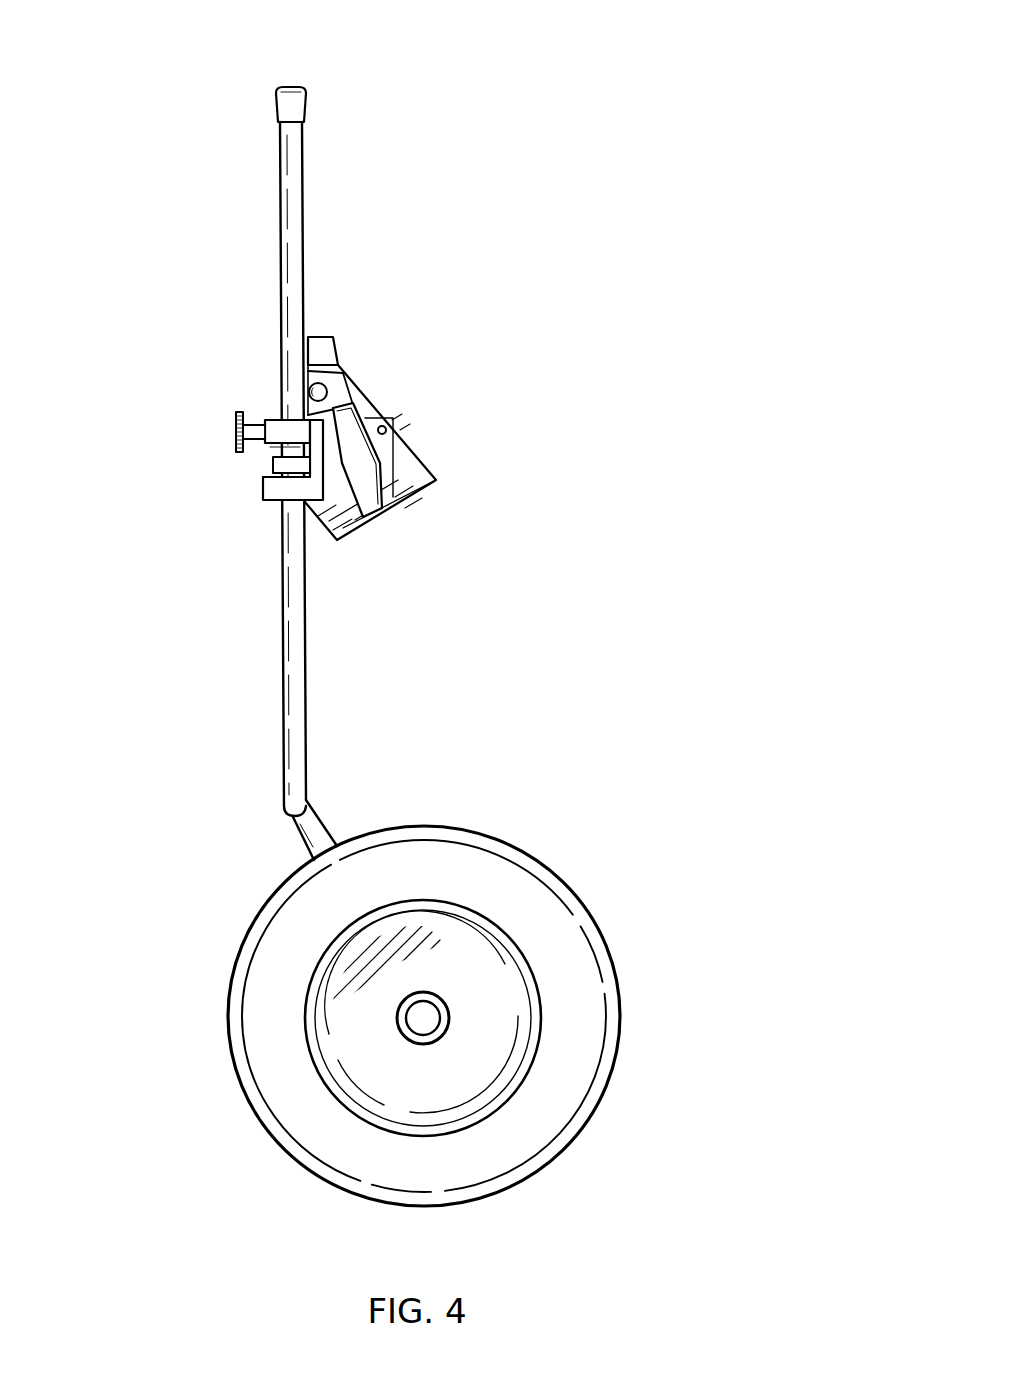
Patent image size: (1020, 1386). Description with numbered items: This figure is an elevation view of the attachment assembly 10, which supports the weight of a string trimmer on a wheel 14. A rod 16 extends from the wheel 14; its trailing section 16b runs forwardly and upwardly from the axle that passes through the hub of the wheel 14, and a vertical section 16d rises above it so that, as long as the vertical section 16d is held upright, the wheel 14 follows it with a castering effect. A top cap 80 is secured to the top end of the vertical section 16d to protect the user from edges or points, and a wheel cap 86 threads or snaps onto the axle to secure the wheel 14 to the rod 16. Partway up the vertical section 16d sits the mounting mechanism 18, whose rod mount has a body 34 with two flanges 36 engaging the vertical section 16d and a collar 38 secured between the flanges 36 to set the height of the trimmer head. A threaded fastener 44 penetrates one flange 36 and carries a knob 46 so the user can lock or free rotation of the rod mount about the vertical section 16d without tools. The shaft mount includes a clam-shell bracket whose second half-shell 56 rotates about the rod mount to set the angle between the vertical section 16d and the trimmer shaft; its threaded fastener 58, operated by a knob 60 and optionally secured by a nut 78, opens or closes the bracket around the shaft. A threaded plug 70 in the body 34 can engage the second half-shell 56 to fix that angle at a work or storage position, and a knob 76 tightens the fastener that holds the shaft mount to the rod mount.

The attachment assembly 10 is at (722, 112).
The wheel 14 is at (567, 1091).
The rod 16 is at (330, 195).
The trailing section 16b is at (328, 834).
The vertical section 16d is at (290, 646).
The mounting mechanism 18 is at (148, 464).
The body 34 is at (343, 544).
The flange 36 is at (266, 498).
The collar 38 is at (268, 462).
The threaded fastener 44 is at (266, 415).
The knob 46 is at (232, 430).
The second half-shell 56 is at (380, 389).
The threaded fastener 58 is at (310, 389).
The knob 60 is at (326, 341).
The threaded plug 70 is at (386, 434).
The knob 76 is at (378, 518).
The nut 78 is at (350, 378).
The top cap 80 is at (275, 99).
The wheel cap 86 is at (433, 1028).